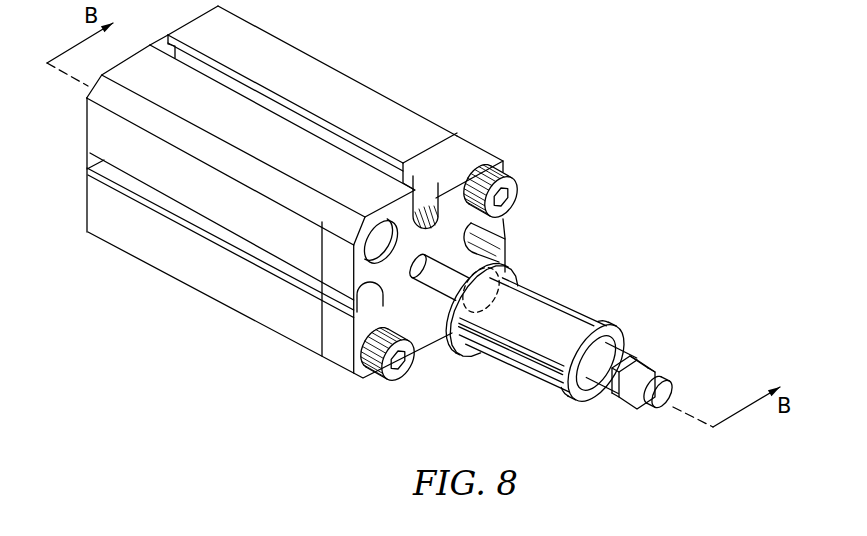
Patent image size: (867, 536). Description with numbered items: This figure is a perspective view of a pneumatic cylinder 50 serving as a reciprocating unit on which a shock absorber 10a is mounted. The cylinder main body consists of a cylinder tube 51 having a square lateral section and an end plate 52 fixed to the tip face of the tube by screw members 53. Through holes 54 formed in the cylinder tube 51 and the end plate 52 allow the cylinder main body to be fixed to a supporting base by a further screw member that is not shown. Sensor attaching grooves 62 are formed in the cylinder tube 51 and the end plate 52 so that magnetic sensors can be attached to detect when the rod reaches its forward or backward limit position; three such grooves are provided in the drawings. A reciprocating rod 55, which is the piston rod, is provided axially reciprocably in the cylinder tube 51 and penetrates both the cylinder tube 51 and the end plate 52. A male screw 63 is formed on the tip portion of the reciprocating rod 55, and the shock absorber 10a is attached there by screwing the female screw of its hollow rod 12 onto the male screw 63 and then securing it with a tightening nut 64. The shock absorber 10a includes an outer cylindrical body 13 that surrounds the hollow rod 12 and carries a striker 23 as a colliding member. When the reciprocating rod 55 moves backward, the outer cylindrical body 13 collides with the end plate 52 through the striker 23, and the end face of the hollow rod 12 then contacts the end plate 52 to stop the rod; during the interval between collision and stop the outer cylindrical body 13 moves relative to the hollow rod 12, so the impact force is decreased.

The shock absorber 10a is at (605, 308).
The hollow rod 12 is at (604, 373).
The outer cylindrical body 13 is at (551, 307).
The striker 23 is at (500, 257).
The pneumatic cylinder 50 is at (400, 98).
The cylinder tube 51 is at (343, 83).
The end plate 52 is at (457, 147).
The screw members 53 is at (514, 178).
The through holes 54 is at (367, 242).
The reciprocating rod 55 is at (437, 288).
The sensor attaching grooves 62 is at (169, 205).
The male screw 63 is at (306, 124).
The tightening nut 64 is at (638, 362).